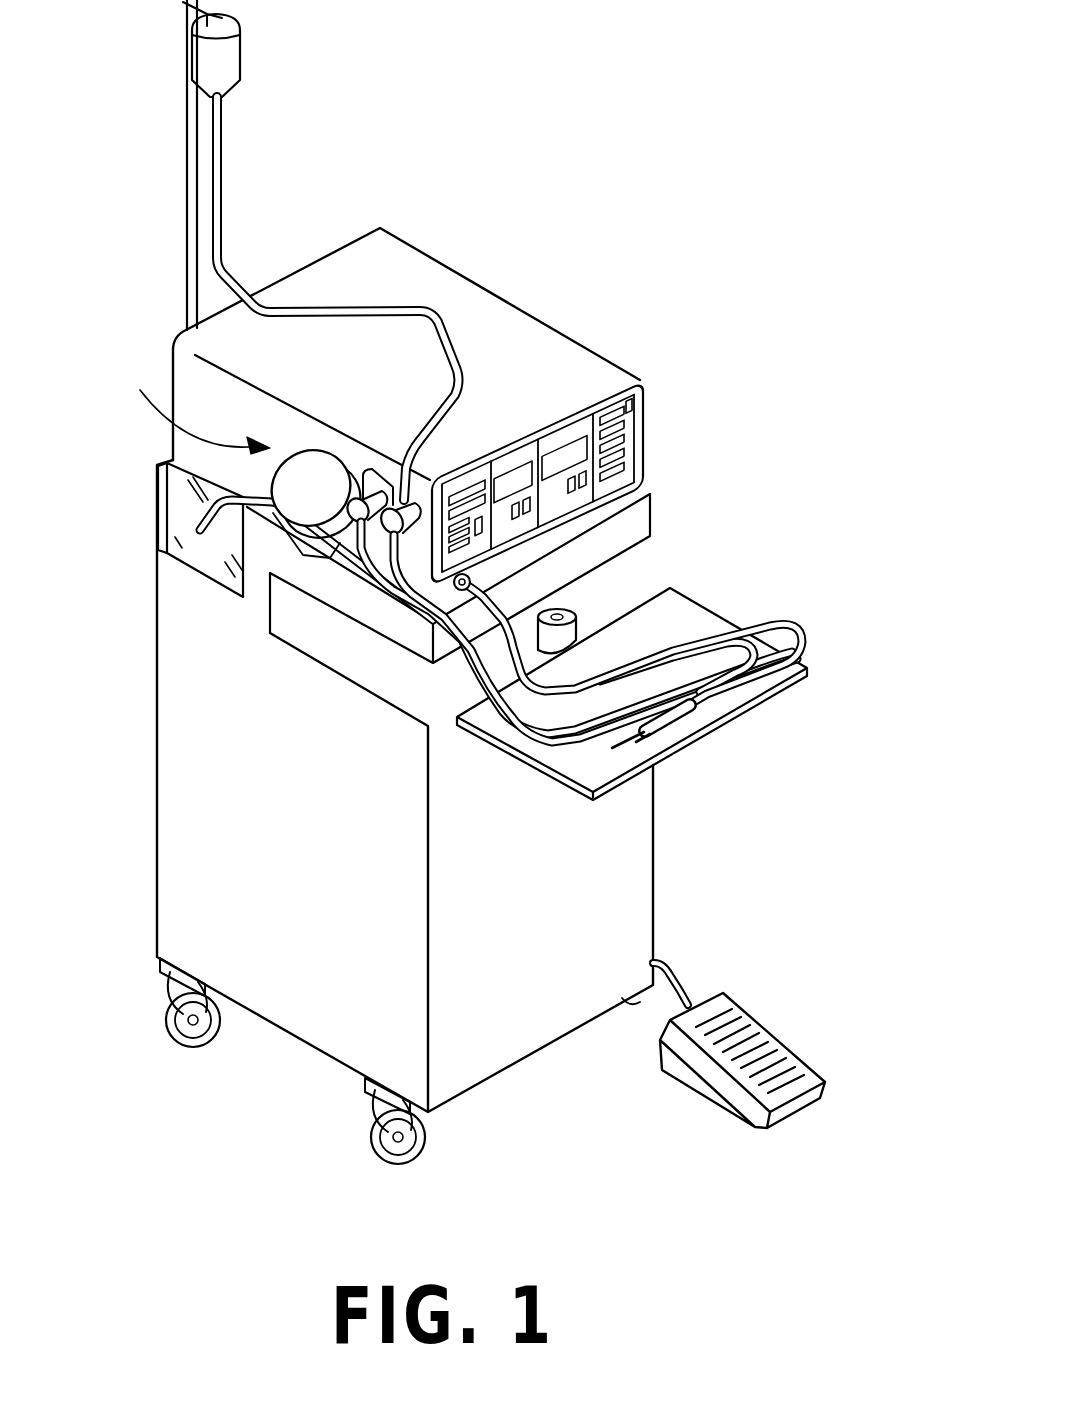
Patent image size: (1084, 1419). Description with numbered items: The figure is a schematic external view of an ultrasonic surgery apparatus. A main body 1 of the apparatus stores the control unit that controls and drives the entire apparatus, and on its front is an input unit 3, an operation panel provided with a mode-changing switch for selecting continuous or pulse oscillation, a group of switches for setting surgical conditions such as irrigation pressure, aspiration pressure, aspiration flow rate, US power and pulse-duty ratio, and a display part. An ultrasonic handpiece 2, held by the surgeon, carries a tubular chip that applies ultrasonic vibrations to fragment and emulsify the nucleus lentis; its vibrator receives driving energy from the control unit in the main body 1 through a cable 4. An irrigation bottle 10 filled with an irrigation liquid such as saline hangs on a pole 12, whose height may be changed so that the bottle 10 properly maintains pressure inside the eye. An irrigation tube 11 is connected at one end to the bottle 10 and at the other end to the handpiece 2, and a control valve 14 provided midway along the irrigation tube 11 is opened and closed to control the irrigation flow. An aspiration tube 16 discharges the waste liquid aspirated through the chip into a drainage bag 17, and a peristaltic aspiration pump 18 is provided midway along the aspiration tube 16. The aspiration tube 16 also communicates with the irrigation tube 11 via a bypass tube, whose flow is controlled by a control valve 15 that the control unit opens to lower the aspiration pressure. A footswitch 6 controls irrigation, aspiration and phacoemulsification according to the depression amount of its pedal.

The main body 1 is at (568, 360).
The ultrasonic handpiece 2 is at (668, 718).
The input unit 3 is at (627, 440).
The cable 4 is at (690, 643).
The footswitch 6 is at (750, 1047).
The irrigation bottle 10 is at (223, 72).
The irrigation tube 11 is at (403, 307).
The pole 12 is at (187, 203).
The control valve 14 is at (425, 482).
The control valve 15 is at (352, 466).
The aspiration tube 16 is at (540, 660).
The drainage bag 17 is at (183, 520).
The peristaltic aspiration pump 18 is at (175, 400).